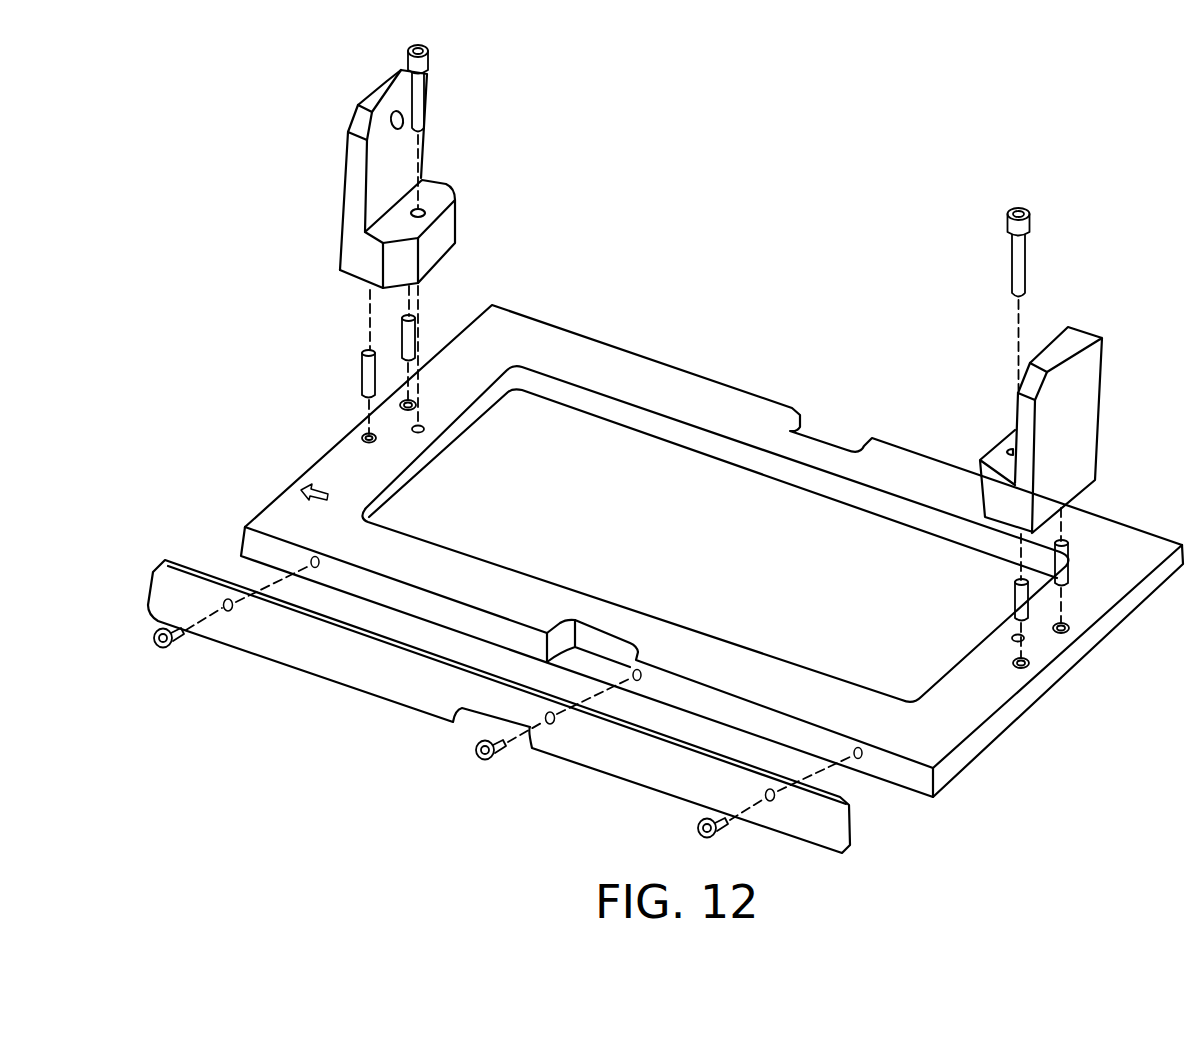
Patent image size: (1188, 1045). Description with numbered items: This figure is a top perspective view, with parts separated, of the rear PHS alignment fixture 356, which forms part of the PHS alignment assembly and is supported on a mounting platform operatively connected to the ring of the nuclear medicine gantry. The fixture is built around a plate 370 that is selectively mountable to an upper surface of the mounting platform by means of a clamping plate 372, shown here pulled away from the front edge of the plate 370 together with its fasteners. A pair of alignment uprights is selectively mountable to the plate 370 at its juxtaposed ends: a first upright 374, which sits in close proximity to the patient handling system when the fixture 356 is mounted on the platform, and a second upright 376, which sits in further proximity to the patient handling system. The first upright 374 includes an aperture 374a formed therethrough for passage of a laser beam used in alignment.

The rear PHS alignment fixture 356 is at (762, 305).
The plate 370 is at (652, 352).
The clamping plate 372 is at (568, 752).
The first upright 374 is at (387, 88).
The aperture 374a is at (392, 120).
The second upright 376 is at (1088, 353).